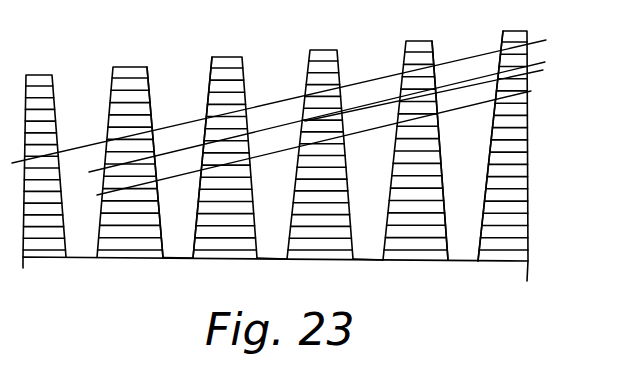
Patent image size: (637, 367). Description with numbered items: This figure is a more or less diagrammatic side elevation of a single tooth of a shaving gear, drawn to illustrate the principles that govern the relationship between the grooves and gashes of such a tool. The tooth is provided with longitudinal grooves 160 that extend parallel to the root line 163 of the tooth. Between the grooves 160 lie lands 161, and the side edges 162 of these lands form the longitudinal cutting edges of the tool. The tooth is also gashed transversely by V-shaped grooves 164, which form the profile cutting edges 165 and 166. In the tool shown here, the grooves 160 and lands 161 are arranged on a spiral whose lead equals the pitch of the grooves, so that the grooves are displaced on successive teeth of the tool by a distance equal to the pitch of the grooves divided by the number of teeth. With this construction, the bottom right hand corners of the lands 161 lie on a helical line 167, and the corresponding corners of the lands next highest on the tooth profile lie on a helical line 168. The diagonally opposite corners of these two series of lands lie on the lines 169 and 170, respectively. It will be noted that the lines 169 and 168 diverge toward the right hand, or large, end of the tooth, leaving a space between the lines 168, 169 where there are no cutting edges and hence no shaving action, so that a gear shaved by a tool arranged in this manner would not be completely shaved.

The longitudinal grooves 160 is at (323, 242).
The lands 161 is at (292, 230).
The side edges 162 is at (198, 226).
The root line 163 is at (462, 261).
The V-shaped grooves 164 is at (358, 60).
The profile cutting edge 165 is at (148, 85).
The profile cutting edge 166 is at (210, 73).
The helical line 167 is at (531, 91).
The helical line 168 is at (545, 62).
The line 169 is at (543, 70).
The line 170 is at (546, 40).